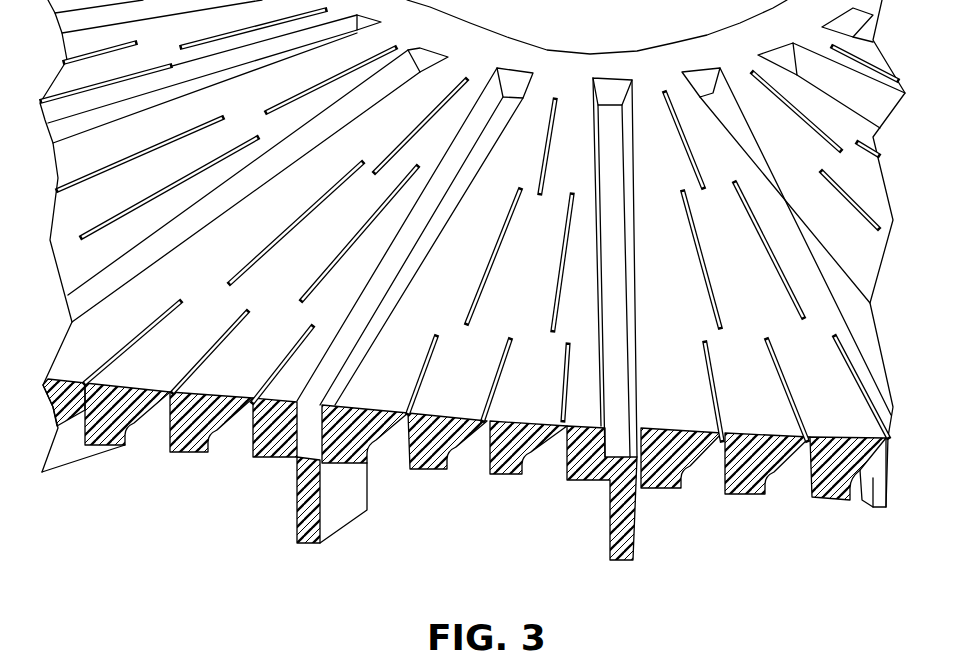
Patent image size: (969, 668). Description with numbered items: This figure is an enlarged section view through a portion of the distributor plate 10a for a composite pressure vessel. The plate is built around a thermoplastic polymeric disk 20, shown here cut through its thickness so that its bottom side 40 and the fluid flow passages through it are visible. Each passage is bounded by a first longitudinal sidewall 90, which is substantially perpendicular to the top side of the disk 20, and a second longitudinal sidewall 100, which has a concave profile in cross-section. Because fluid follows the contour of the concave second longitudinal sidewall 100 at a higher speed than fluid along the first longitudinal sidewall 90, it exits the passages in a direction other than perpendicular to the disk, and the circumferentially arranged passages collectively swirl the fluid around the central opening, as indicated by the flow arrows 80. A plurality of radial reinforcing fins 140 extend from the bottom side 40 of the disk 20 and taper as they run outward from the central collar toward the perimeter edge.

The distributor plate 10a is at (182, 547).
The thermoplastic polymeric disk 20 is at (283, 462).
The bottom side 40 is at (412, 465).
The flow arrows 80 is at (537, 355).
The first longitudinal sidewall 90 is at (458, 458).
The second longitudinal sidewall 100 is at (468, 477).
The radial reinforcing fins 140 is at (634, 530).